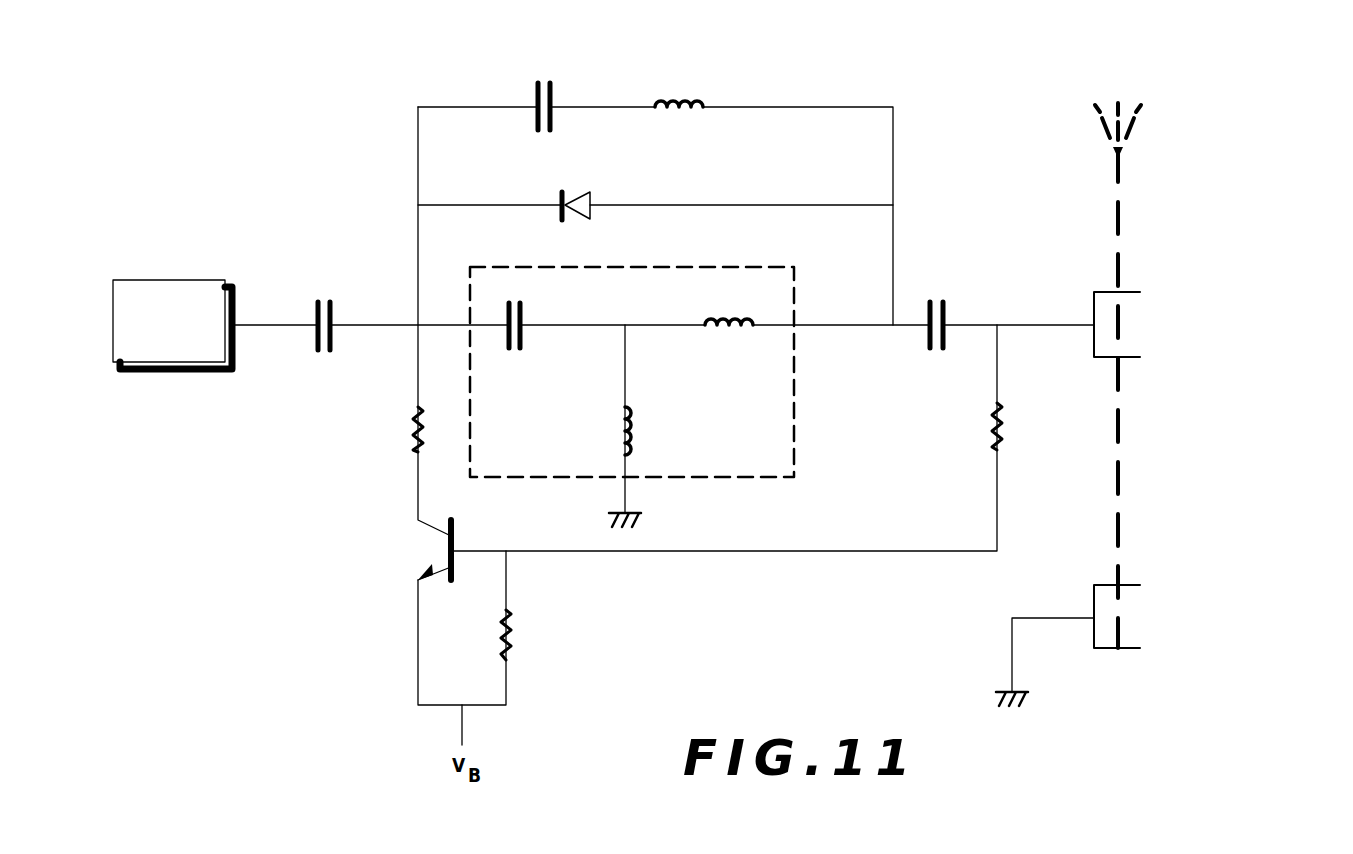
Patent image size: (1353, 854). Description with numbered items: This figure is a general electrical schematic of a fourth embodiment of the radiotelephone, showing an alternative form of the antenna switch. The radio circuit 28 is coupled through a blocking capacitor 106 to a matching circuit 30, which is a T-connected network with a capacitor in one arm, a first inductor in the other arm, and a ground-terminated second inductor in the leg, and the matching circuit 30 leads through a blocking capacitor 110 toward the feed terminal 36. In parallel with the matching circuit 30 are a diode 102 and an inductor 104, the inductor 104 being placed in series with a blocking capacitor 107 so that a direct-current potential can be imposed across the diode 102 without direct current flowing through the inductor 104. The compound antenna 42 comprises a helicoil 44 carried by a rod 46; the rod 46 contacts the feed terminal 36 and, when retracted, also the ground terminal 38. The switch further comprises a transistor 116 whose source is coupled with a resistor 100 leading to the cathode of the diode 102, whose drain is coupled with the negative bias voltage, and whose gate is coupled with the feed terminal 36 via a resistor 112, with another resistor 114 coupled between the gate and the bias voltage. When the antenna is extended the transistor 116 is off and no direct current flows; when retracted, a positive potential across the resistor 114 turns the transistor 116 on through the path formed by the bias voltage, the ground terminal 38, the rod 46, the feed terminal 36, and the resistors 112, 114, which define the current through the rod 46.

The radio circuit 28 is at (180, 279).
The matching circuit 30 is at (794, 430).
The feed terminal 36 is at (1094, 347).
The ground terminal 38 is at (1094, 605).
The compound antenna 42 is at (1213, 158).
The helicoil 44 is at (1140, 112).
The rod 46 is at (1118, 440).
The resistor 100 is at (412, 420).
The diode 102 is at (590, 193).
The inductor 104 is at (703, 100).
The blocking capacitor 106 is at (320, 352).
The blocking capacitor 107 is at (548, 85).
The blocking capacitor 110 is at (945, 300).
The resistor 112 is at (992, 418).
The resistor 114 is at (520, 637).
The transistor 116 is at (442, 567).